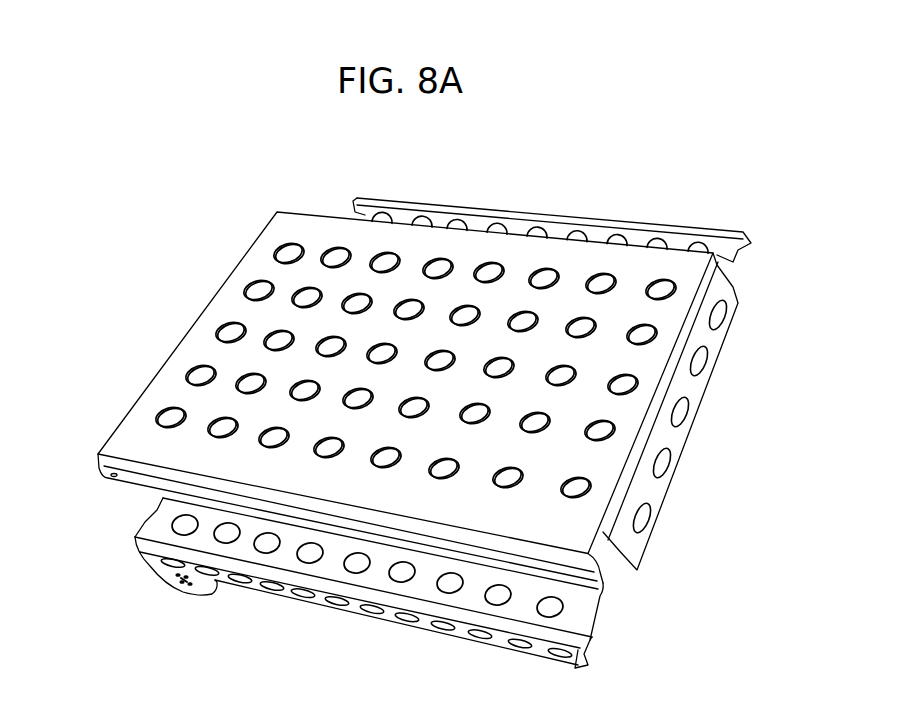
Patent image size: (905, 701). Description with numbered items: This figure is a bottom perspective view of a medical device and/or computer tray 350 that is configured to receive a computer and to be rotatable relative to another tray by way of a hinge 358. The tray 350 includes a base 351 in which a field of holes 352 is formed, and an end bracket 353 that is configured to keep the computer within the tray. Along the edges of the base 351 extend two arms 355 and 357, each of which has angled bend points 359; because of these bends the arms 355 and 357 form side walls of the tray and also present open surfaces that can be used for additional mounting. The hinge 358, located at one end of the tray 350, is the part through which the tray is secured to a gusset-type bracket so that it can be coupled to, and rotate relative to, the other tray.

The tray 350 is at (645, 143).
The base 351 is at (279, 227).
The holes 352 is at (247, 288).
The end bracket 353 is at (694, 398).
The arm 355 is at (480, 212).
The arm 357 is at (323, 575).
The hinge 358 is at (183, 590).
The angled bend points 359 is at (602, 586).